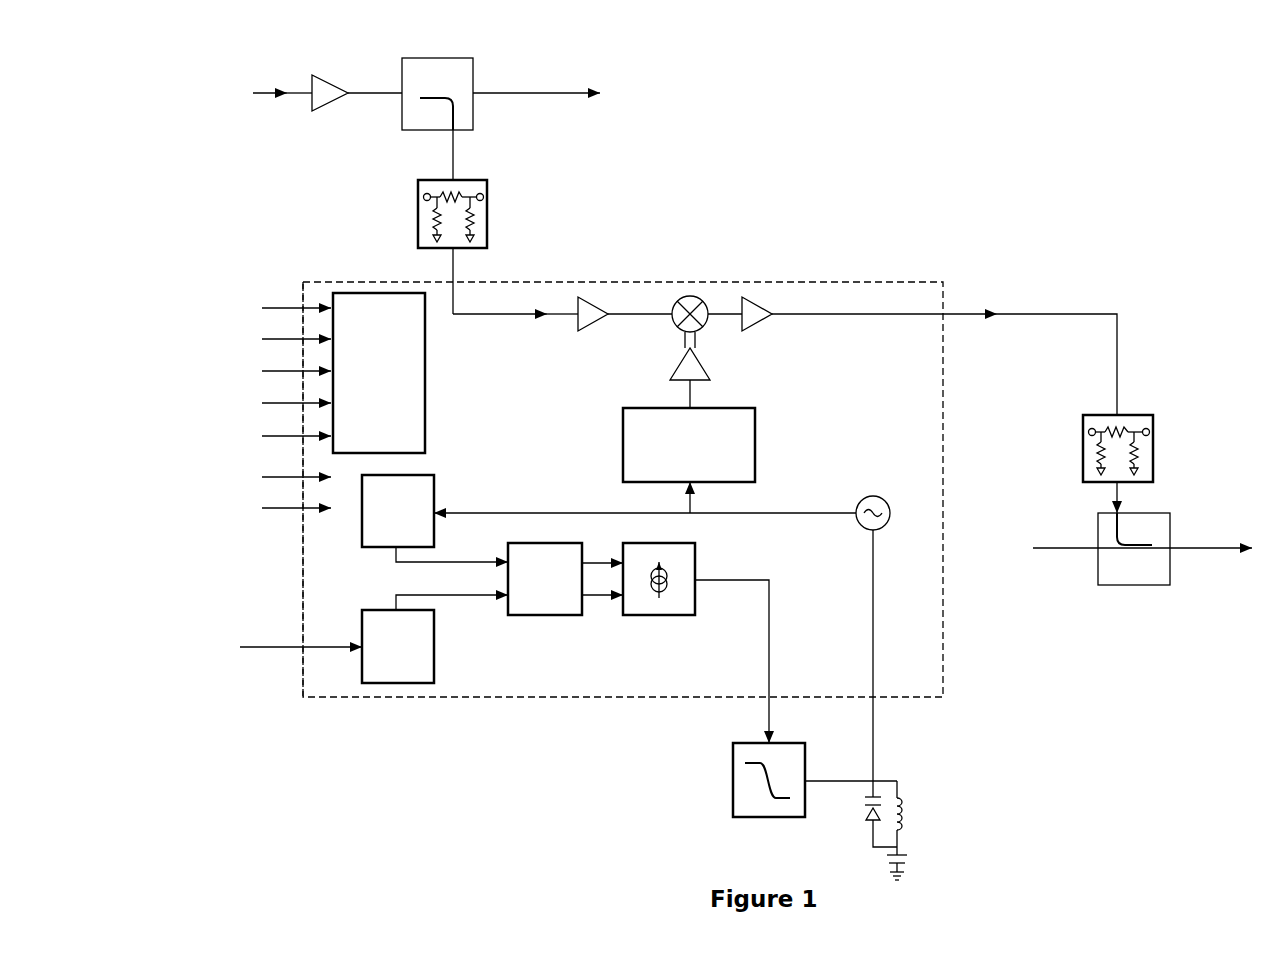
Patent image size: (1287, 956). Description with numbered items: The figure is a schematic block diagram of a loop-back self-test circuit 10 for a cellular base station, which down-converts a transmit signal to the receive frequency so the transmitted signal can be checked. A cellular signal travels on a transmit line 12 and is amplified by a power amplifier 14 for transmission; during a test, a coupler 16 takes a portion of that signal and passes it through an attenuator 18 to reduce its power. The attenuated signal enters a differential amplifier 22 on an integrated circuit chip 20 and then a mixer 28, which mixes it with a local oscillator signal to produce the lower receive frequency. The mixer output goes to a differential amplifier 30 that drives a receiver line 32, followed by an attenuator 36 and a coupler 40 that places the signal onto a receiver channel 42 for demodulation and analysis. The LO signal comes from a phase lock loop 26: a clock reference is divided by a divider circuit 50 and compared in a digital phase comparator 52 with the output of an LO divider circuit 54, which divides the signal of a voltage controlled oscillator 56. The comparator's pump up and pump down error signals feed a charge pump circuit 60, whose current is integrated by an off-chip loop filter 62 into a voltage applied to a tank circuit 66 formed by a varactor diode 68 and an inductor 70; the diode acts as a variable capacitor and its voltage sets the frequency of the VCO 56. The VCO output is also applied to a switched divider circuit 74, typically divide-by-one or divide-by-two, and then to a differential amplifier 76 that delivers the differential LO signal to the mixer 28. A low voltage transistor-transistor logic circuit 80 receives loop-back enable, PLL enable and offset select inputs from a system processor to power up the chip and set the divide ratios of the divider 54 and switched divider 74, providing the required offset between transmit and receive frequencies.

The loop-back self-test circuit 10 is at (868, 157).
The transmit line 12 is at (508, 93).
The power amplifier 14 is at (320, 110).
The coupler 16 is at (402, 75).
The attenuator 18 is at (487, 213).
The integrated circuit chip 20 is at (595, 282).
The differential amplifier 22 is at (588, 330).
The phase lock loop 26 is at (528, 433).
The mixer 28 is at (700, 290).
The differential amplifier 30 is at (753, 332).
The receiver line 32 is at (1040, 314).
The attenuator 36 is at (1153, 447).
The coupler 40 is at (1152, 513).
The receiver channel 42 is at (1197, 548).
The divider circuit 50 is at (395, 683).
The digital phase comparator 52 is at (542, 615).
The LO divider circuit 54 is at (422, 475).
The voltage controlled oscillator 56 is at (875, 495).
The charge pump circuit 60 is at (653, 615).
The loop filter 62 is at (733, 780).
The tank circuit 66 is at (935, 815).
The varactor diode 68 is at (863, 815).
The inductor 70 is at (900, 800).
The switched divider circuit 74 is at (755, 443).
The differential amplifier 76 is at (708, 367).
The LVTTL circuit 80 is at (373, 293).